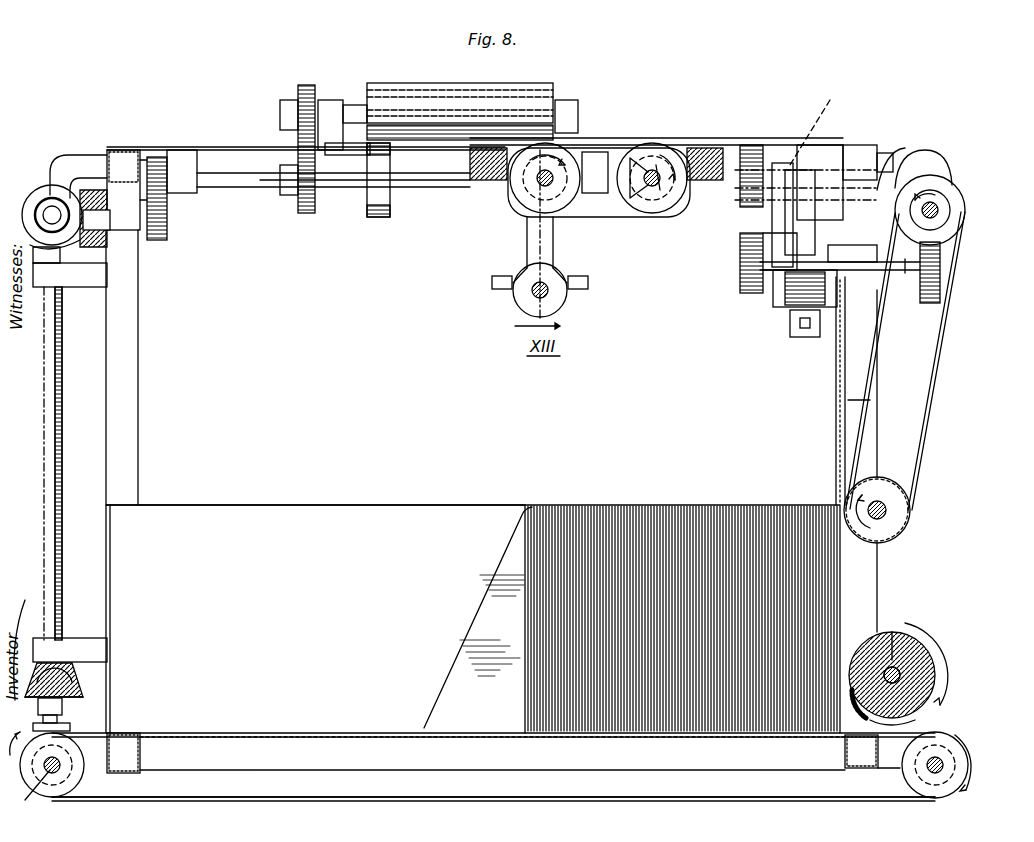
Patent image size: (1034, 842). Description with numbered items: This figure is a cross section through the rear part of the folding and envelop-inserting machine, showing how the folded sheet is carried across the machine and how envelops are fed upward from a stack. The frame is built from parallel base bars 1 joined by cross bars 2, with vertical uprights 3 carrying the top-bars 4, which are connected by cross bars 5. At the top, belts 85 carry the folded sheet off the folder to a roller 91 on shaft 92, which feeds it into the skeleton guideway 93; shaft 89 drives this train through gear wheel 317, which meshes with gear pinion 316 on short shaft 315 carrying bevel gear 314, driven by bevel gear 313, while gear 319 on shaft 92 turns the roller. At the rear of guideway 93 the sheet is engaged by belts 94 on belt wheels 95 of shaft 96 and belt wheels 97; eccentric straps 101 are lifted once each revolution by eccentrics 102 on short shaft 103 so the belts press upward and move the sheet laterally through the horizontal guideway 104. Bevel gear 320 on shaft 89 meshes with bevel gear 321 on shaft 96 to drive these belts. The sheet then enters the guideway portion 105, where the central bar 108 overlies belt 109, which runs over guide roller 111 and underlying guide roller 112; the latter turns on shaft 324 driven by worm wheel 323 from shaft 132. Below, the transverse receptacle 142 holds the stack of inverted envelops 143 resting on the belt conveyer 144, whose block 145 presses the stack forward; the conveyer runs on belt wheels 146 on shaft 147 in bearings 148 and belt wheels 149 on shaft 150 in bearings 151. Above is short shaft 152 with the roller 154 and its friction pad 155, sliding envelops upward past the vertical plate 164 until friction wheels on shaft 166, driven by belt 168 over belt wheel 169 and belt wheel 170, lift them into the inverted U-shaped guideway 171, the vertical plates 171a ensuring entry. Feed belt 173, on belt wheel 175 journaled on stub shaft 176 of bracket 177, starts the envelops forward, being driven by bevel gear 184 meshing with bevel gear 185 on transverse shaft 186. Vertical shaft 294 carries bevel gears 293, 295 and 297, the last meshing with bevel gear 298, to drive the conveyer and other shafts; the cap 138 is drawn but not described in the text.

The base bars 1 is at (178, 770).
The cross bars 2 is at (456, 762).
The vertical uprights 3 is at (140, 425).
The top-bars 4 is at (115, 150).
The cross bars 5 is at (222, 147).
The belts 85 is at (376, 218).
The transverse shaft 89 is at (426, 188).
The roller 91 is at (426, 83).
The shaft 92 is at (350, 100).
The guideway 93 is at (365, 150).
The belts 94 is at (600, 218).
The belt wheels 95 is at (648, 210).
The longitudinally extending shaft 96 is at (535, 192).
The belt wheels 97 is at (512, 190).
The eccentric straps 101 is at (546, 242).
The eccentrics 102 is at (504, 280).
The short shaft 103 is at (530, 298).
The horizontal guideway 104 is at (690, 138).
The guideway portion 105 is at (822, 145).
The central longitudinally-extending bar 108 is at (780, 163).
The belt 109 is at (750, 300).
The guide roller 111 is at (748, 145).
The guide roller 112 is at (740, 290).
The shaft 132 is at (940, 210).
The cap 138 is at (925, 152).
The transverse receptacle 142 is at (315, 607).
The inverted envelops 143 is at (630, 508).
The belt conveyer 144 is at (336, 800).
The block 145 is at (462, 640).
The belt wheels 146 is at (72, 790).
The shaft 147 is at (26, 791).
The bearings 148 is at (140, 750).
The belt wheels 149 is at (942, 740).
The shaft 150 is at (945, 762).
The bearings 151 is at (888, 770).
The short shaft 152 is at (897, 660).
The roller 154 is at (940, 658).
The friction pad 155 is at (908, 716).
The vertical plate 164 is at (52, 205).
The shaft 166 is at (885, 505).
The belt 168 is at (936, 348).
The belt wheel 169 is at (895, 478).
The belt wheel 170 is at (945, 188).
The inverted U-shaped guideway 171 is at (848, 300).
The vertical plates 171a is at (848, 418).
The feed belt 173 is at (780, 300).
The belt wheel 175 is at (800, 310).
The stub shaft 176 is at (804, 337).
The bracket 177 is at (800, 235).
The bevel gear 184 is at (822, 255).
The bevel gear 185 is at (814, 121).
The transverse shaft 186 is at (892, 178).
The bevel gear 293 is at (33, 274).
The vertical shaft 294 is at (44, 446).
The bevel gear 295 is at (65, 710).
The bevel gear 297 is at (85, 680).
The bevel gear 298 is at (22, 595).
The bevel gear 313 is at (35, 200).
The bevel gear 314 is at (105, 250).
The short shaft 315 is at (100, 240).
The gear pinion 316 is at (302, 214).
The gear wheel 317 is at (157, 157).
The gear 319 is at (305, 85).
The bevel gear 320 is at (636, 165).
The bevel gear 321 is at (658, 150).
The worm wheel 323 is at (942, 290).
The shaft 324 is at (896, 272).